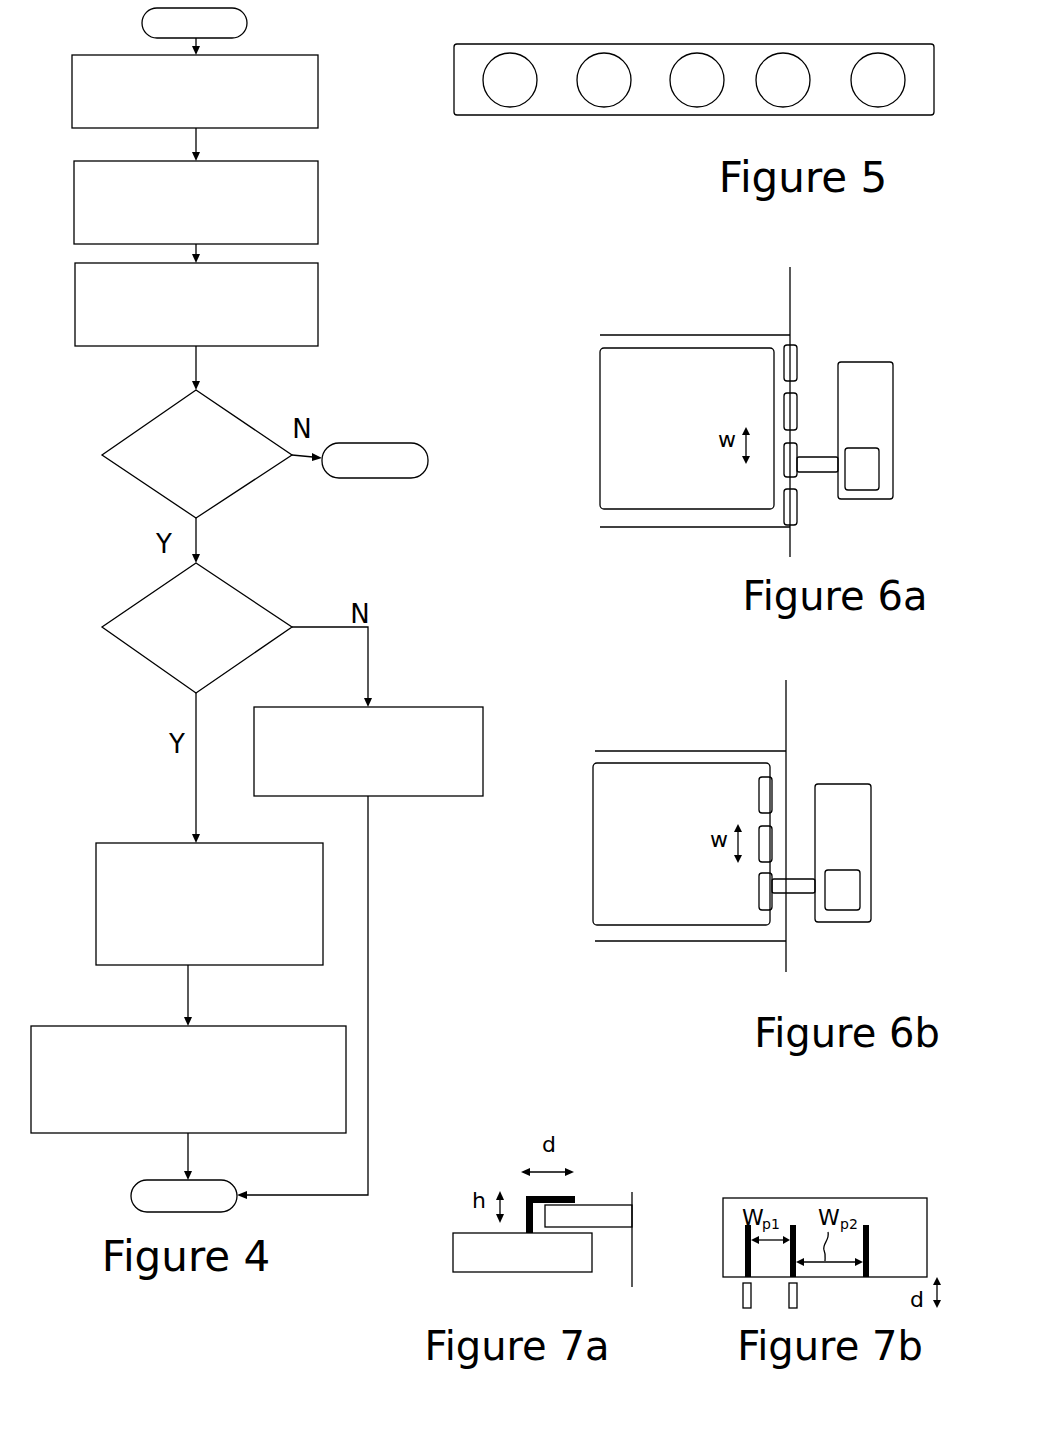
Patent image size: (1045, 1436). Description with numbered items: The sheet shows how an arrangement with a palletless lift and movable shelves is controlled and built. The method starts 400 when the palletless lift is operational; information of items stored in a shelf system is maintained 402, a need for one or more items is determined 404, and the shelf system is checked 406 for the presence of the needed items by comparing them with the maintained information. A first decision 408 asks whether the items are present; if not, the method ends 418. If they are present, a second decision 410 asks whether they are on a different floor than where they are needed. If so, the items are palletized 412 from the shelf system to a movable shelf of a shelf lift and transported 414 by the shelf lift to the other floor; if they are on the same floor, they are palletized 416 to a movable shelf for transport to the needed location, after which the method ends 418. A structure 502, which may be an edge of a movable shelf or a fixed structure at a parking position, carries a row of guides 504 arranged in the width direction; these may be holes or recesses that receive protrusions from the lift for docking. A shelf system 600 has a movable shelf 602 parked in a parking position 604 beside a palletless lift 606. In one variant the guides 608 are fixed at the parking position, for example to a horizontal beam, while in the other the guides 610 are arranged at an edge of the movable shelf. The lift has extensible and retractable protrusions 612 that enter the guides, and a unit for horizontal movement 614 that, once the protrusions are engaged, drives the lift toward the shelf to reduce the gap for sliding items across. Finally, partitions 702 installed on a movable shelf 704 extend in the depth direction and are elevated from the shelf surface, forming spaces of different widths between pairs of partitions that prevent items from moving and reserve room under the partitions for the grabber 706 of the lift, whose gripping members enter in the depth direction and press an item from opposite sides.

In FIG. 4, the method start 400 is at (194, 23).
In FIG. 4, the maintaining information of items 402 is at (195, 91).
In FIG. 4, the determining a need for items 404 is at (196, 202).
In FIG. 4, the checking presence of needed items 406 is at (196, 304).
In FIG. 4, the presence decision 408 is at (234, 414).
In FIG. 4, the different floor decision 410 is at (236, 591).
In FIG. 4, the palletizing items to a movable shelf 412 is at (176, 843).
In FIG. 4, the transporting items by shelf lift 414 is at (80, 1026).
In FIG. 4, the palletizing items to a movable shelf on the same floor 416 is at (396, 707).
In FIG. 4, the method end 418 is at (279, 827).
In FIG. 5, the structure 502 is at (643, 44).
In FIG. 5, the guides 504 is at (694, 80).
In FIG. 6A, the shelf system 600 is at (695, 412).
In FIG. 6B, the shelf system 600 is at (690, 826).
In FIG. 6A, the movable shelf 602 is at (687, 428).
In FIG. 6B, the movable shelf 602 is at (681, 844).
In FIG. 6A, the parking position 604 is at (578, 358).
In FIG. 6B, the parking position 604 is at (574, 769).
In FIG. 6A, the palletless lift 606 is at (865, 430).
In FIG. 6B, the palletless lift 606 is at (843, 853).
In FIG. 6A, the guides fixed at the parking position 608 is at (799, 359).
In FIG. 6B, the guides at the movable shelf 610 is at (774, 792).
In FIG. 6A, the protrusions 612 is at (814, 475).
In FIG. 6B, the protrusions 612 is at (796, 894).
In FIG. 6A, the unit for horizontal movement 614 is at (878, 487).
In FIG. 6B, the unit for horizontal movement 614 is at (864, 877).
In FIG. 7A, the partitions 702 is at (578, 1178).
In FIG. 7B, the partitions 702 is at (743, 1266).
In FIG. 7A, the movable shelf 704 is at (522, 1252).
In FIG. 7B, the movable shelf 704 is at (825, 1237).
In FIG. 7A, the grabber 706 is at (597, 1206).
In FIG. 7B, the grabber 706 is at (743, 1299).